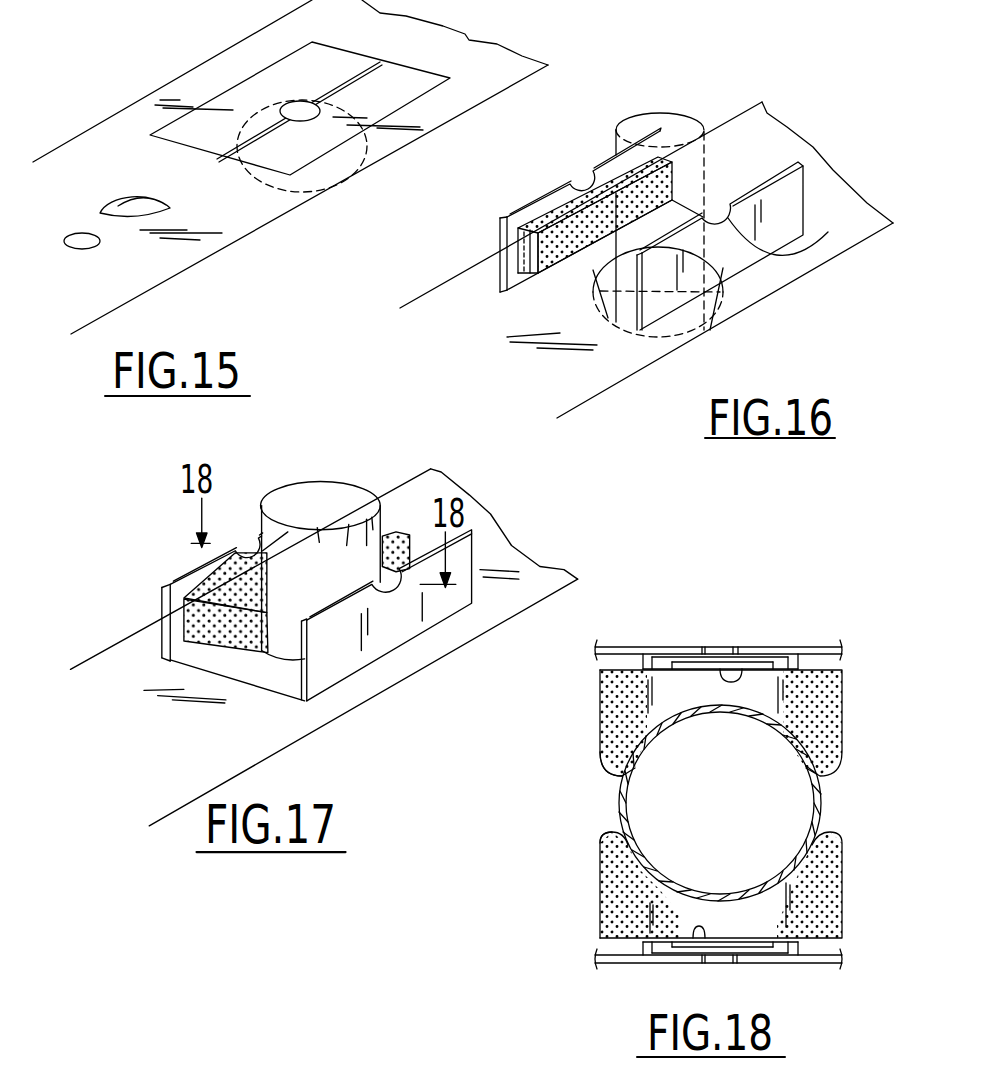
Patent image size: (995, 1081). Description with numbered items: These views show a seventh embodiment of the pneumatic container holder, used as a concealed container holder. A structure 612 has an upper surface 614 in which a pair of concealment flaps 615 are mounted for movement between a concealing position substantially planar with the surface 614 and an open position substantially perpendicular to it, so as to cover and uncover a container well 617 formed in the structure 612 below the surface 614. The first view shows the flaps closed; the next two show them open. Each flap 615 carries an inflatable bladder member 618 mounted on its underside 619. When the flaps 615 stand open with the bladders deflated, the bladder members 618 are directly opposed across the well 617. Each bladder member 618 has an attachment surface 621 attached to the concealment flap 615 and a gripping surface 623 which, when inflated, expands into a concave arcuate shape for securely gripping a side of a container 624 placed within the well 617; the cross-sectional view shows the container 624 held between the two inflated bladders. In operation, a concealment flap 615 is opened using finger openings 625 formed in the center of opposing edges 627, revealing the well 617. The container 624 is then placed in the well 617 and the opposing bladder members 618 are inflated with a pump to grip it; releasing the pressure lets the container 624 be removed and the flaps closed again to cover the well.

In FIG. 15, the structure 612 is at (467, 32).
In FIG. 15, the upper surface 614 is at (85, 152).
In FIG. 15, the concealment flap 615 is at (280, 65).
In FIG. 16, the concealment flap 615 is at (670, 229).
In FIG. 17, the concealment flap 615 is at (275, 619).
In FIG. 18, the concealment flap 615 is at (610, 647).
In FIG. 16, the container well 617 is at (700, 297).
In FIG. 16, the inflatable bladder member 618 is at (526, 240).
In FIG. 17, the inflatable bladder member 618 is at (190, 605).
In FIG. 18, the inflatable bladder member 618 is at (822, 707).
In FIG. 16, the underside 619 is at (506, 216).
In FIG. 17, the underside 619 is at (163, 593).
In FIG. 18, the attachment surface 621 is at (737, 680).
In FIG. 16, the gripping surface 623 is at (562, 255).
In FIG. 18, the gripping surface 623 is at (635, 753).
In FIG. 16, the container 624 is at (653, 107).
In FIG. 17, the container 624 is at (322, 480).
In FIG. 18, the container 624 is at (822, 795).
In FIG. 15, the finger opening 625 is at (297, 100).
In FIG. 16, the finger opening 625 is at (812, 262).
In FIG. 17, the finger opening 625 is at (183, 563).
In FIG. 16, the opposing edge 627 is at (500, 213).